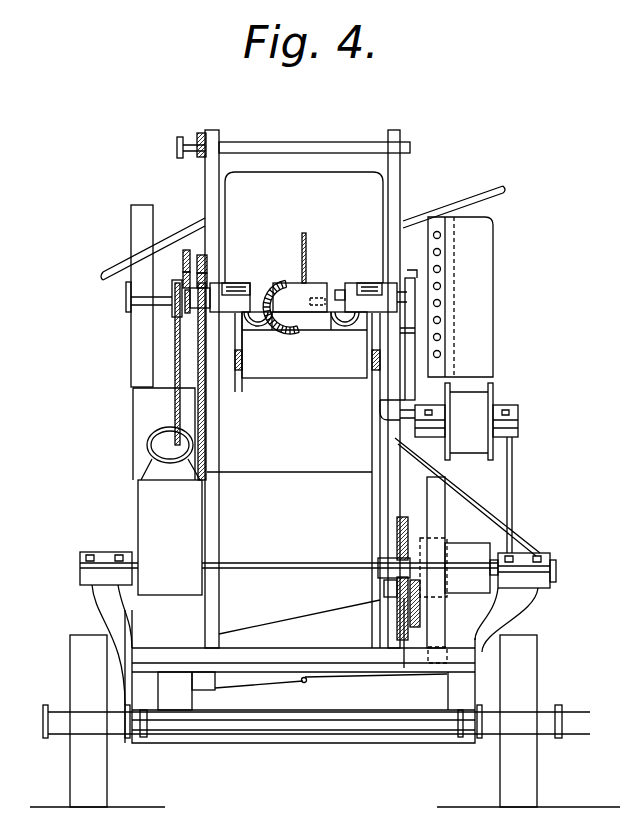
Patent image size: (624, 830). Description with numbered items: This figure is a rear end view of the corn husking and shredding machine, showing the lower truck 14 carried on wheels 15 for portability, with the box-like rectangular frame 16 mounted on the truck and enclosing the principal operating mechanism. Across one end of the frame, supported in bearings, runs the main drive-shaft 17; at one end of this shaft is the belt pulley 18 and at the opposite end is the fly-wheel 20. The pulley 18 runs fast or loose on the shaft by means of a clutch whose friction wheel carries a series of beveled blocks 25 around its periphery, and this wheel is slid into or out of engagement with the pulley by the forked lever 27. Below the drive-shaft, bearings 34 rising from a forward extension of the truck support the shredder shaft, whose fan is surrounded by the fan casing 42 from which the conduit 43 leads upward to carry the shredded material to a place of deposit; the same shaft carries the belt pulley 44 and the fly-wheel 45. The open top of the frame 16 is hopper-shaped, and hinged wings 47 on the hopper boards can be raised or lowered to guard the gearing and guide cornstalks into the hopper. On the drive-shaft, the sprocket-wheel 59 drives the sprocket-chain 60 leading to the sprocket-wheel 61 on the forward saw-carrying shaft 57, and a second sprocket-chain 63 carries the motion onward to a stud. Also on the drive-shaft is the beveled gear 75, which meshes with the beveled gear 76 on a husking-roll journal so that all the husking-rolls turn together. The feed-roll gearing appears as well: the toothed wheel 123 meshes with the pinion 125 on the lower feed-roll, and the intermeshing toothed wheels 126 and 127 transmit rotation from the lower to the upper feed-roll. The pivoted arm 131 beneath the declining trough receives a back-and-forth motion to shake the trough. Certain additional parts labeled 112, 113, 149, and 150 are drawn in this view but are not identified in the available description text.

The truck 14 is at (185, 703).
The wheels 15 is at (100, 774).
The frame 16 is at (392, 199).
The main drive-shaft 17 is at (338, 290).
The pulley 18 is at (480, 297).
The fly-wheel 20 is at (131, 213).
The beveled blocks 25 is at (441, 238).
The lever 27 is at (416, 341).
The bearings 34 is at (104, 600).
The fan casing 42 is at (198, 623).
The conduit 43 is at (150, 496).
The pulley 44 is at (462, 554).
The fly-wheel 45 is at (438, 498).
The wings 47 is at (190, 229).
The forward saw-carrying shaft 57 is at (205, 273).
The sprocket-wheel 59 is at (189, 314).
The sprocket-chain 60 is at (180, 283).
The sprocket-wheel 61 is at (190, 255).
The sprocket-chain 63 is at (205, 264).
The beveled gear 75 is at (264, 283).
The beveled gear 76 is at (290, 335).
The rod 112 is at (176, 355).
The shaft 113 is at (174, 298).
The toothed wheel 123 is at (410, 636).
The pinion 125 is at (420, 590).
The toothed wheel 126 is at (404, 668).
The toothed wheel 127 is at (405, 518).
The arm 131 is at (333, 680).
The rod 149 is at (206, 430).
The clutch element 150 is at (207, 284).